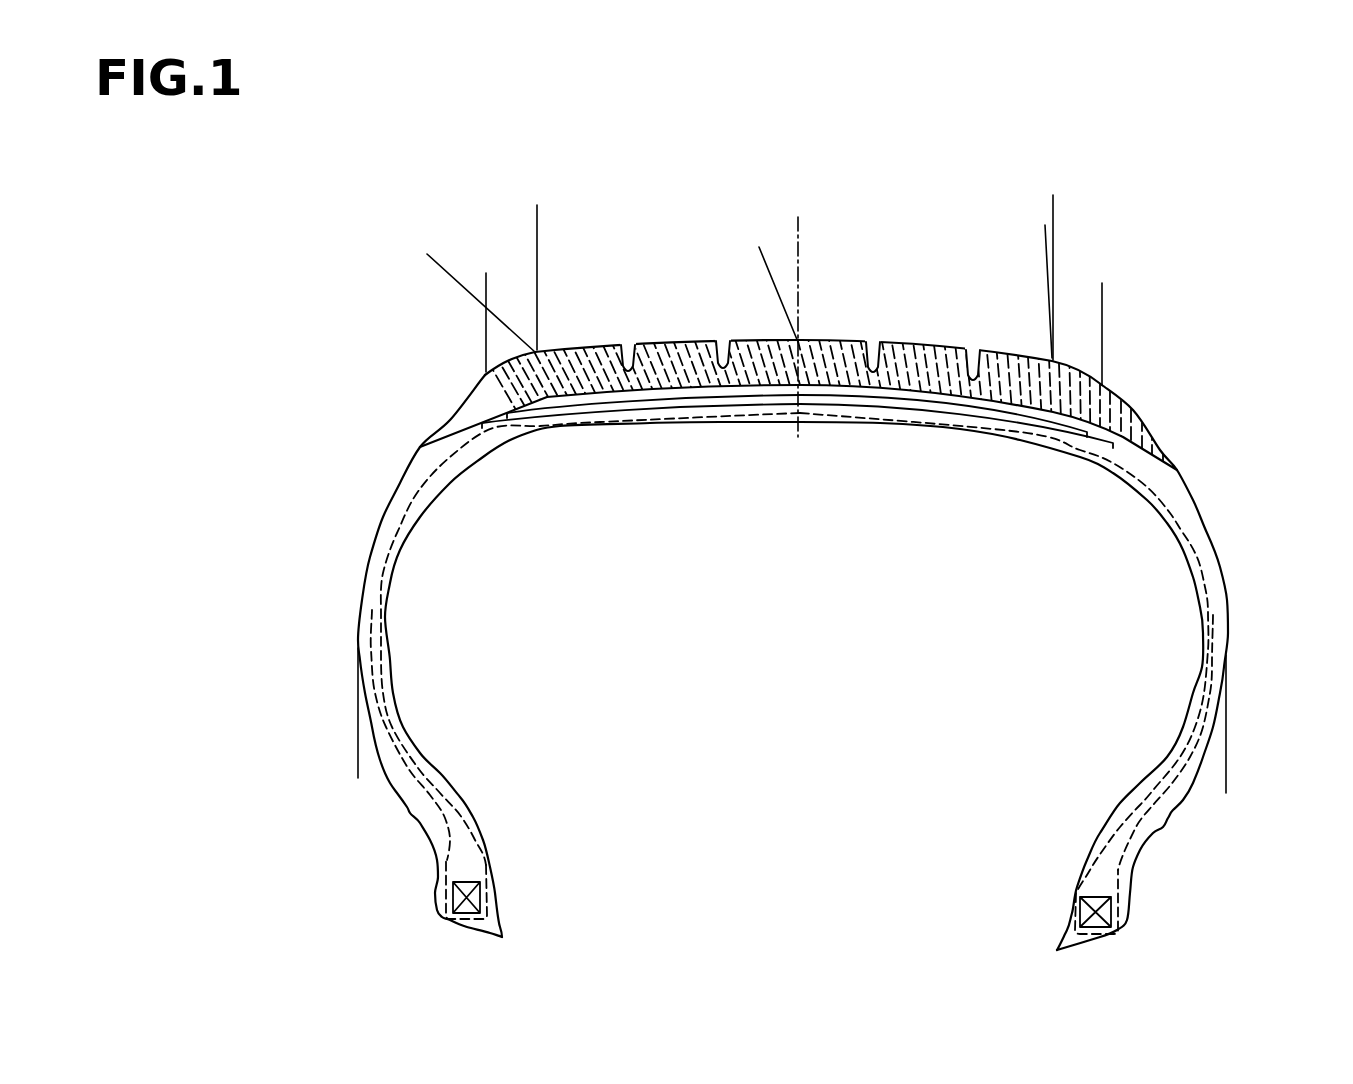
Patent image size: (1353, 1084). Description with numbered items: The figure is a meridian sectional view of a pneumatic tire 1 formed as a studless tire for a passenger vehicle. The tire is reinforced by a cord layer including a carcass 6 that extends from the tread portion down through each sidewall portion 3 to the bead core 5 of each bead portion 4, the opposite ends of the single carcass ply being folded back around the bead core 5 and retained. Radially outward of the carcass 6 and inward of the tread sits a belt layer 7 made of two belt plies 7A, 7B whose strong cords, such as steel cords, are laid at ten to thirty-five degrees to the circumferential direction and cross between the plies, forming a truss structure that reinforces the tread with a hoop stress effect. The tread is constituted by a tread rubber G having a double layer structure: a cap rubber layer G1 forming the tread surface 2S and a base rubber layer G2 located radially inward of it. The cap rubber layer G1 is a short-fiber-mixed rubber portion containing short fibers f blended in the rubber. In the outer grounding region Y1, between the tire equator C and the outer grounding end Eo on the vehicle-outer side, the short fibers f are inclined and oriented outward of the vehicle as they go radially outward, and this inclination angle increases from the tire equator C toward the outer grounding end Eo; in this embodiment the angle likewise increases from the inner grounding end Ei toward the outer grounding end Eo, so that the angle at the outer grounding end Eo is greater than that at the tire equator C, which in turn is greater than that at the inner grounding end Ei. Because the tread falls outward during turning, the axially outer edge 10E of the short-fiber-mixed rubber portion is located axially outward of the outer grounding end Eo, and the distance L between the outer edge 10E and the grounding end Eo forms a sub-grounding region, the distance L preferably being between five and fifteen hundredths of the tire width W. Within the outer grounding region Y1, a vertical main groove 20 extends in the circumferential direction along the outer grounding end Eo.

The pneumatic tire 1 is at (1198, 420).
The tread surface 2S is at (902, 342).
The sidewall portion 3 is at (1250, 598).
The bead portion 4 is at (1070, 855).
The bead core 5 is at (1083, 910).
The carcass 6 is at (1198, 566).
The belt layer 7 is at (797, 477).
The belt ply 7A is at (862, 410).
The belt ply 7B is at (822, 402).
The axially outer edge of the short-fiber-mixed rubber portion 10E is at (484, 373).
The vertical main groove 20 is at (622, 342).
The cap rubber layer G1 is at (826, 352).
The base rubber layer G2 is at (840, 395).
The tread rubber G is at (983, 160).
The outer grounding end Eo is at (538, 350).
The inner grounding end Ei is at (1050, 358).
The short fibers f is at (687, 342).
The tire equator C is at (800, 218).
The distance between the outer edge and the outer grounding end L is at (537, 277).
The tire width W is at (1226, 782).
The outer grounding region Y1 is at (793, 214).